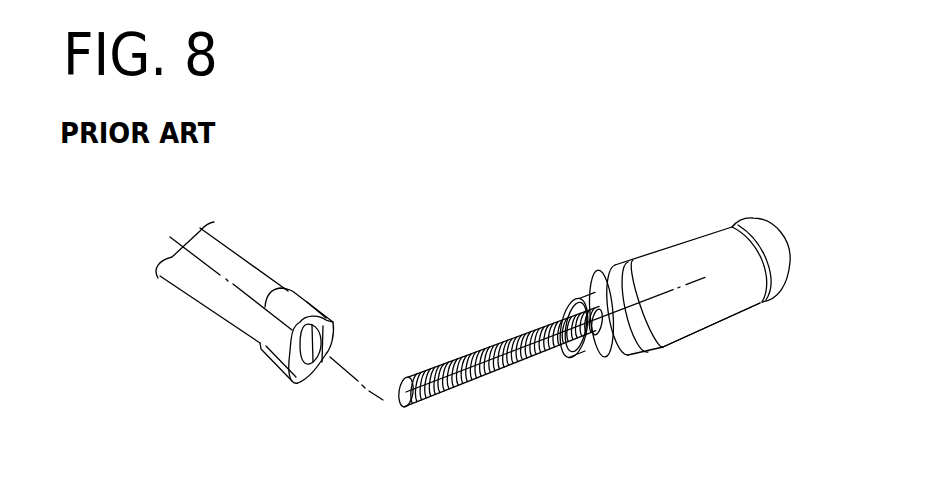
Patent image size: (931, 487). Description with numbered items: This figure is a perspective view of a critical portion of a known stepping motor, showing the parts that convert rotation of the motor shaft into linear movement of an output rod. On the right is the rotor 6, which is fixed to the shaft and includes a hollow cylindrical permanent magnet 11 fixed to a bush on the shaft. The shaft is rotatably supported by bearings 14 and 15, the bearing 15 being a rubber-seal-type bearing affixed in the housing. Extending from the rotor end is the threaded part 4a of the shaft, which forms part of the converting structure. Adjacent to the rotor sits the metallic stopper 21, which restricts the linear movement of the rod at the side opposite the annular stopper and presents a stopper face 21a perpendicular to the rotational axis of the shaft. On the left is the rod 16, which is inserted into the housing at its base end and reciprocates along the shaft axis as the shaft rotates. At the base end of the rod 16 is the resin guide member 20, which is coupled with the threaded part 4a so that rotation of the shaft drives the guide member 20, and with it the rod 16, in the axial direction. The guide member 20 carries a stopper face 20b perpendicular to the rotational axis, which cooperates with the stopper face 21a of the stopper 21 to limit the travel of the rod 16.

The rod 16 is at (232, 246).
The guide member 20 is at (290, 291).
The stopper face 20b is at (327, 352).
The threaded part 4a is at (520, 392).
The stopper 21 is at (595, 392).
The stopper face 21a is at (598, 295).
The bearing 15 is at (663, 390).
The rotor 6 is at (660, 246).
The permanent magnet 11 is at (727, 381).
The bearing 14 is at (797, 340).